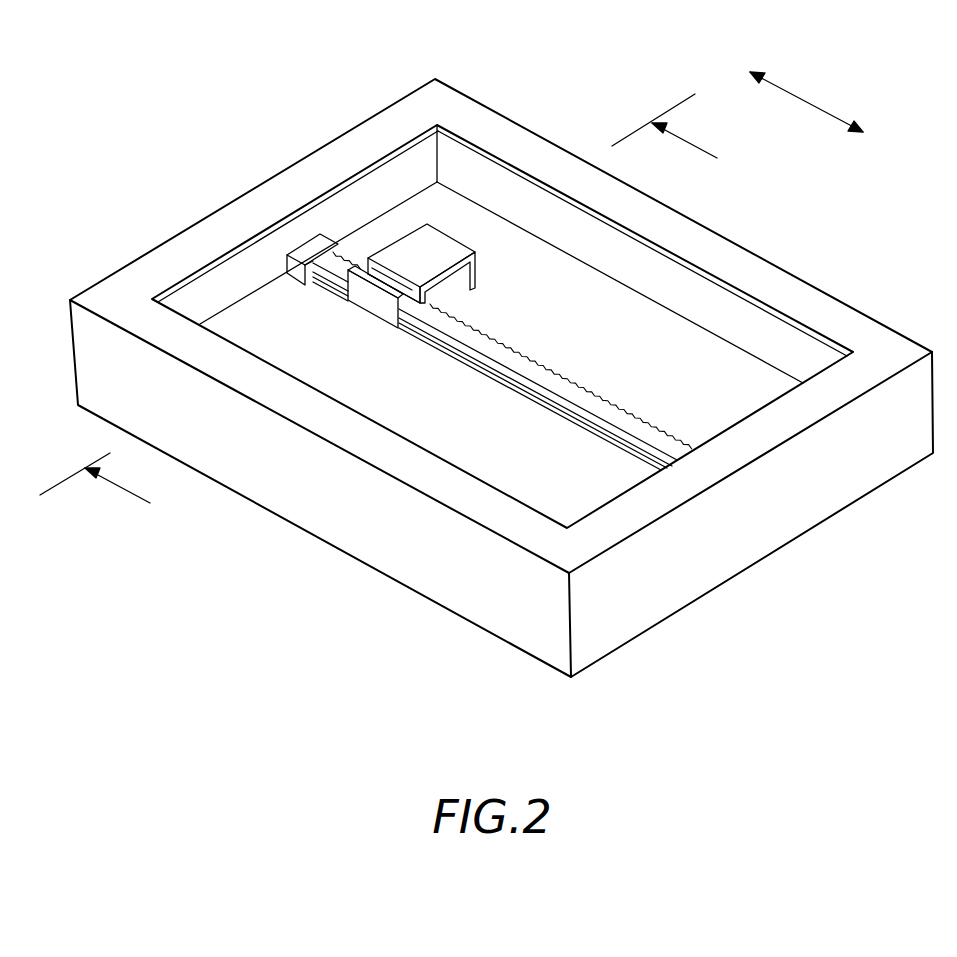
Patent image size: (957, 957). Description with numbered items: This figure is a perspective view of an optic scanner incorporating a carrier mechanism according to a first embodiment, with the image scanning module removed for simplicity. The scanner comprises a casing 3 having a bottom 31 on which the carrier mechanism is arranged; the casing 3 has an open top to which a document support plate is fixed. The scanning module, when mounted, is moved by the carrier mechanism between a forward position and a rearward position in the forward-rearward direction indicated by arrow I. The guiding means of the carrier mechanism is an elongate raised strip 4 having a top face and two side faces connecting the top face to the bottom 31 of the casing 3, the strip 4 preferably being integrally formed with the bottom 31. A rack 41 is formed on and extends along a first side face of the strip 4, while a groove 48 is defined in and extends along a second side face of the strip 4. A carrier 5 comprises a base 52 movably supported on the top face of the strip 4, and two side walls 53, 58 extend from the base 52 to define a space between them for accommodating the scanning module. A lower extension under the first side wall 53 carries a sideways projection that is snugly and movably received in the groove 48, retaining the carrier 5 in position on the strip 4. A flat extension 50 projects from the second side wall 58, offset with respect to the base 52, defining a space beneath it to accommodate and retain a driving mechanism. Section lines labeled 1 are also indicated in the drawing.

The section line 1 is at (389, 309).
The casing 3 is at (873, 477).
The bottom 31 is at (740, 398).
The elongate raised strip 4 is at (553, 382).
The rack 41 is at (522, 353).
The groove 48 is at (553, 413).
The carrier 5 is at (384, 318).
The flat extension 50 is at (437, 247).
The base 52 is at (417, 303).
The first side wall 53 is at (377, 305).
The second side wall 58 is at (397, 280).
The arrow I is at (806, 98).